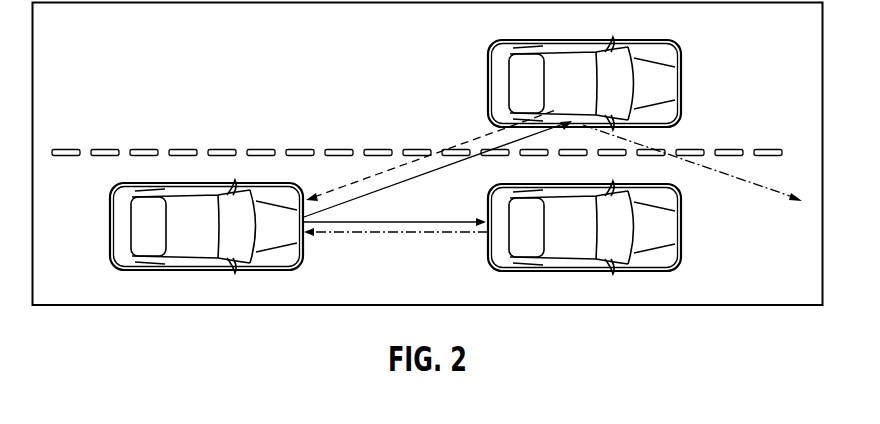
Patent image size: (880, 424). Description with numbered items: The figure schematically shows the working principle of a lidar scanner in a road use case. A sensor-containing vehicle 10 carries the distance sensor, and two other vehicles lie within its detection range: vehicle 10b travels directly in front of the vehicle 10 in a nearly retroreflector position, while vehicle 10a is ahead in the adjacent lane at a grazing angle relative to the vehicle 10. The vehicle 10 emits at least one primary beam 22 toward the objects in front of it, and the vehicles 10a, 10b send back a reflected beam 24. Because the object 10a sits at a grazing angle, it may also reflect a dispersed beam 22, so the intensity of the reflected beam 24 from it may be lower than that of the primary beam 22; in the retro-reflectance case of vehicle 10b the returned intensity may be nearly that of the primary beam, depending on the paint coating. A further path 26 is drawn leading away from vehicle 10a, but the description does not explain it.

The vehicle 10 is at (190, 264).
The vehicle 10a is at (578, 44).
The vehicle 10b is at (640, 268).
The primary beam 22 is at (408, 183).
The reflected beam 24 is at (405, 168).
The remote vehicle travel path 26 is at (718, 172).